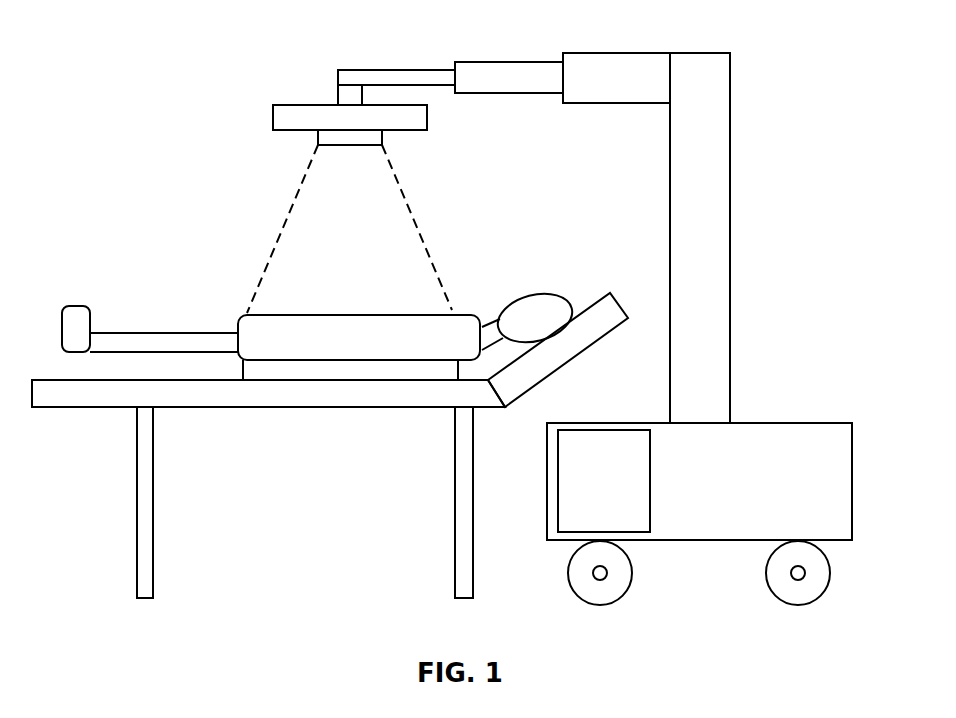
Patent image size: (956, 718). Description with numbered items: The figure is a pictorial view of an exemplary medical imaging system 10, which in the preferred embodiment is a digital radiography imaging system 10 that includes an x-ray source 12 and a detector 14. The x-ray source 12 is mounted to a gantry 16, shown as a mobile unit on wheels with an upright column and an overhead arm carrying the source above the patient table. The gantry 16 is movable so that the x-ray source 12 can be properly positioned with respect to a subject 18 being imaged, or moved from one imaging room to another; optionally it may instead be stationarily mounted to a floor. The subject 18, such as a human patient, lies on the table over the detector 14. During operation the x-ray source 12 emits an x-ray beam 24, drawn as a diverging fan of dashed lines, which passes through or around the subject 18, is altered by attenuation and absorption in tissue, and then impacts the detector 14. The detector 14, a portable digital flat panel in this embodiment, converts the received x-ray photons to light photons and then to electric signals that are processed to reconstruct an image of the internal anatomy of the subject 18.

The medical imaging system 10 is at (764, 58).
The x-ray source 12 is at (283, 120).
The detector 14 is at (346, 373).
The gantry 16 is at (780, 437).
The subject 18 is at (466, 330).
The x-ray beam 24 is at (408, 207).